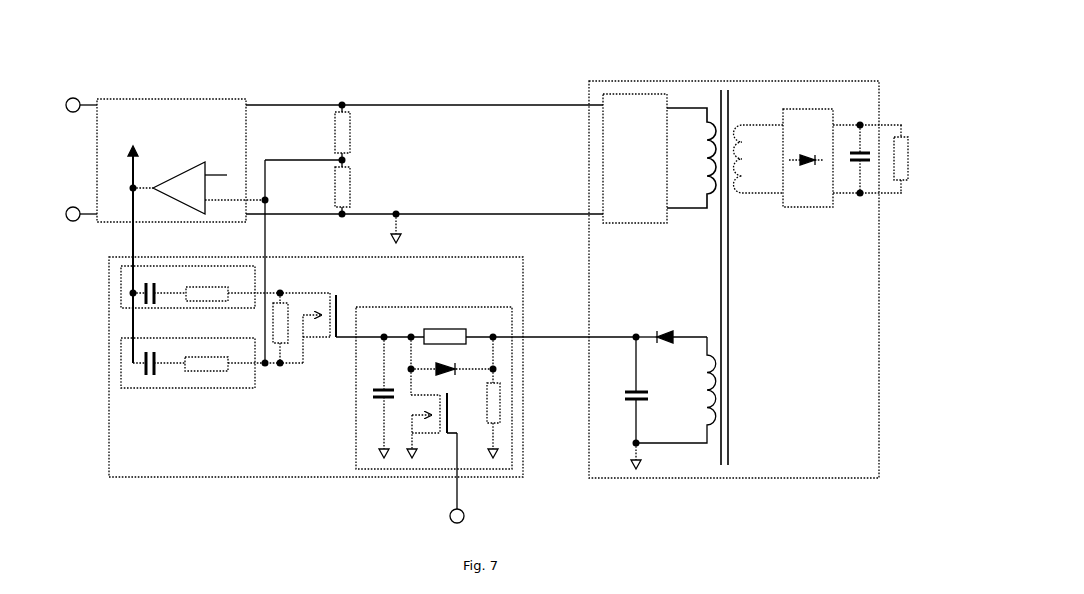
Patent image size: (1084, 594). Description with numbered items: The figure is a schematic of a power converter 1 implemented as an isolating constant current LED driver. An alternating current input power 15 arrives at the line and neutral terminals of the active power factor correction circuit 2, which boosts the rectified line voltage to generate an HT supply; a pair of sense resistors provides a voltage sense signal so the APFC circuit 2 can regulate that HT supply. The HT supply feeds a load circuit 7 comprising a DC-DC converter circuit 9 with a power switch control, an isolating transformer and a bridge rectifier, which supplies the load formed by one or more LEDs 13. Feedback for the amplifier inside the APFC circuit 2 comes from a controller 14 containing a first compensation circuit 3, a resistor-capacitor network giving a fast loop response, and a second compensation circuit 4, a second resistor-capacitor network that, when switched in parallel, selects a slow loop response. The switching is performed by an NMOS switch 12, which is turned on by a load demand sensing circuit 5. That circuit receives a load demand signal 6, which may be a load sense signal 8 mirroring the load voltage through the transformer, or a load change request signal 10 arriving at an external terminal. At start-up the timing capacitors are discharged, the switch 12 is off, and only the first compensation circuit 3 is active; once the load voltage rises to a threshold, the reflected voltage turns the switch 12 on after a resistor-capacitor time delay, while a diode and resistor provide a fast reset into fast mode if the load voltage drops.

The power converter 1 is at (273, 68).
The active power factor correction circuit 2 is at (167, 97).
The first compensation circuit 3 is at (118, 340).
The second compensation circuit 4 is at (113, 258).
The load demand sensing circuit 5 is at (458, 305).
The load demand signal 6 is at (543, 422).
The load circuit 7 is at (888, 57).
The load sense signal 8 is at (578, 339).
The DC-DC converter circuit 9 is at (742, 78).
The load change request signal 10 is at (467, 513).
The switch 12 is at (350, 339).
The LEDs 13 is at (912, 135).
The controller 14 is at (107, 478).
The AC input power 15 is at (66, 100).